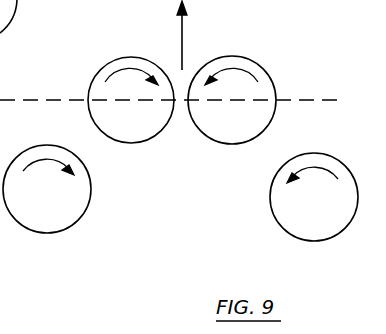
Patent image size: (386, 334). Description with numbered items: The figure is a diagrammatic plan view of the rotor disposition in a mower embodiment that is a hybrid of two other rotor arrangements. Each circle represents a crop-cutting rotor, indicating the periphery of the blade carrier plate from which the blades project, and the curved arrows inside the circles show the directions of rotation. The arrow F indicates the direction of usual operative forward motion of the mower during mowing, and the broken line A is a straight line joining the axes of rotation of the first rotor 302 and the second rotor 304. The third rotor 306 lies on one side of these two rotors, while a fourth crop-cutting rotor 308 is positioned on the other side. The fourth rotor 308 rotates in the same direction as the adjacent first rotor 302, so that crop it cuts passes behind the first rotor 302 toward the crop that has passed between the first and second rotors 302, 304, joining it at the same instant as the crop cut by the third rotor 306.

The first rotor 302 is at (212, 143).
The second rotor 304 is at (140, 143).
The third rotor 306 is at (88, 203).
The fourth crop-cutting rotor 308 is at (274, 214).
The broken line A is at (72, 99).
The arrow F is at (189, 35).